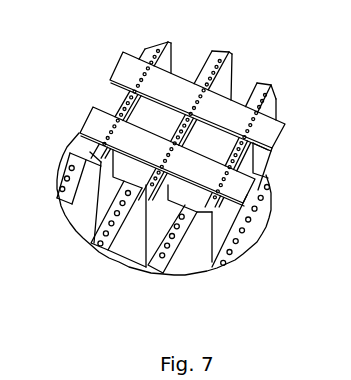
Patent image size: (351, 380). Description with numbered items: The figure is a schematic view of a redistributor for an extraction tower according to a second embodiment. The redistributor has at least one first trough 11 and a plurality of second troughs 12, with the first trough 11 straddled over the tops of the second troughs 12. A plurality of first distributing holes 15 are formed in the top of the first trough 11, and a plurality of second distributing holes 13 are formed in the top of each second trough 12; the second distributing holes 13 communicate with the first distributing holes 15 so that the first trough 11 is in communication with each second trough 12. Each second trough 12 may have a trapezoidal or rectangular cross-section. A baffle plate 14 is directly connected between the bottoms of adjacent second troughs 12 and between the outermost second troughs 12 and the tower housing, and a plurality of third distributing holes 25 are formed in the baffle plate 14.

The first trough 11 is at (270, 130).
The second trough 12 is at (218, 238).
The second distributing holes 13 is at (275, 95).
The baffle plate 14 is at (66, 167).
The first distributing holes 15 is at (155, 80).
The third distributing holes 25 is at (62, 190).